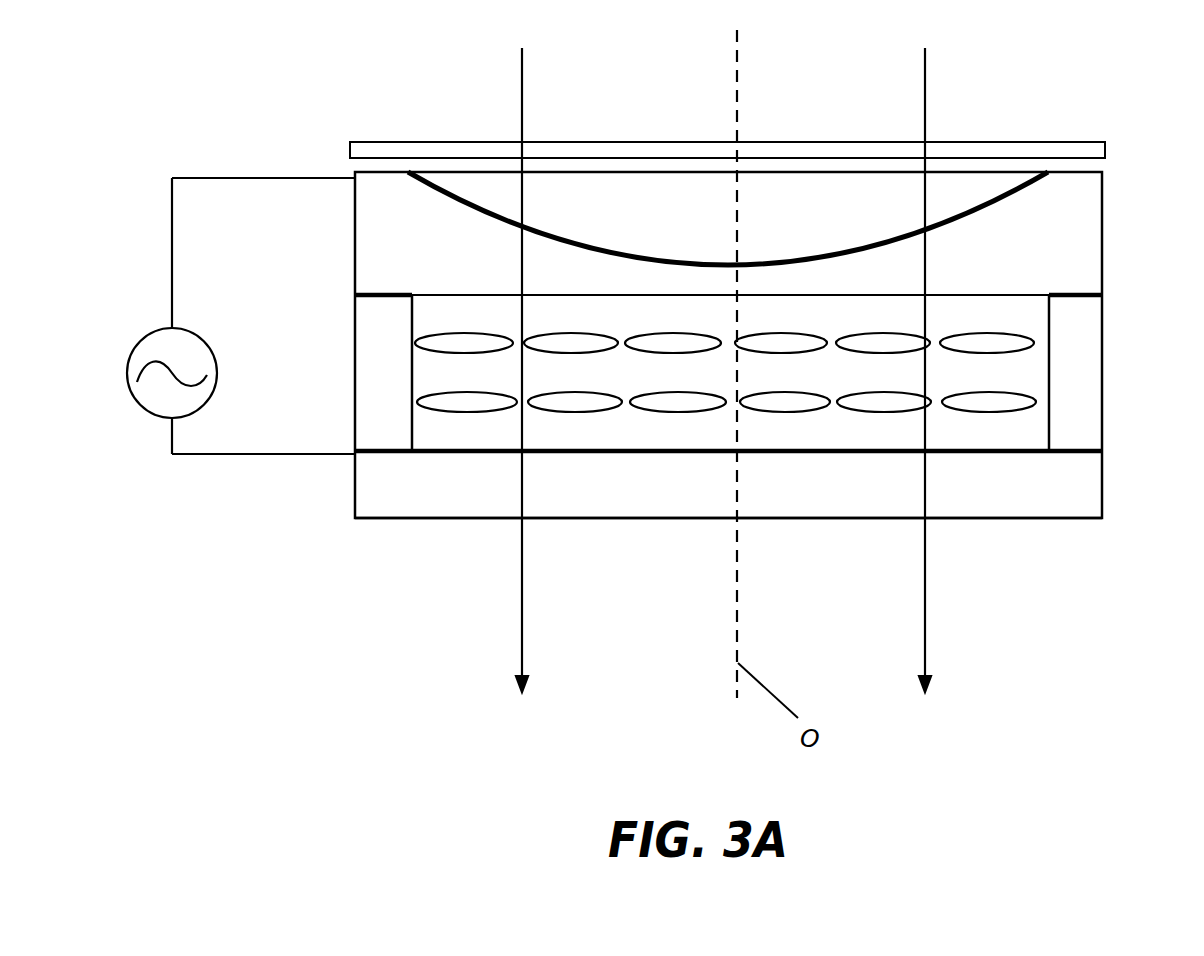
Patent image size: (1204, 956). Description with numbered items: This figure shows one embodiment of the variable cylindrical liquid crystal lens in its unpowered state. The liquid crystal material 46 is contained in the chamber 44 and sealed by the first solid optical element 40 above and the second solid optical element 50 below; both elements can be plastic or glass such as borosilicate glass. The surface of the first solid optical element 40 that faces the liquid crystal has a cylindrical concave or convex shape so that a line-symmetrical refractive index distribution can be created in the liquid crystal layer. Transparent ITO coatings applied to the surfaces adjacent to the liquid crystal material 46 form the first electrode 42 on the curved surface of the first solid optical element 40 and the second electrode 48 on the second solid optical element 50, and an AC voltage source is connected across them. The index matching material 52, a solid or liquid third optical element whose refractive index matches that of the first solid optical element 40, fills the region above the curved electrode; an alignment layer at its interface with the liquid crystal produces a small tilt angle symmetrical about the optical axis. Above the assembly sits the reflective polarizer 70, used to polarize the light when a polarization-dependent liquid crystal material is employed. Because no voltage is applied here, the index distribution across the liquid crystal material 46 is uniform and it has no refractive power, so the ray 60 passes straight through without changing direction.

The first solid optical element 40 is at (578, 187).
The first electrode 42 is at (1013, 203).
The chamber 44 is at (1092, 352).
The liquid crystal material 46 is at (997, 417).
The second electrode 48 is at (1067, 453).
The second solid optical element 50 is at (892, 495).
The index matching material 52 is at (440, 206).
The ray 60 is at (522, 617).
The polarizer 70 is at (1047, 145).